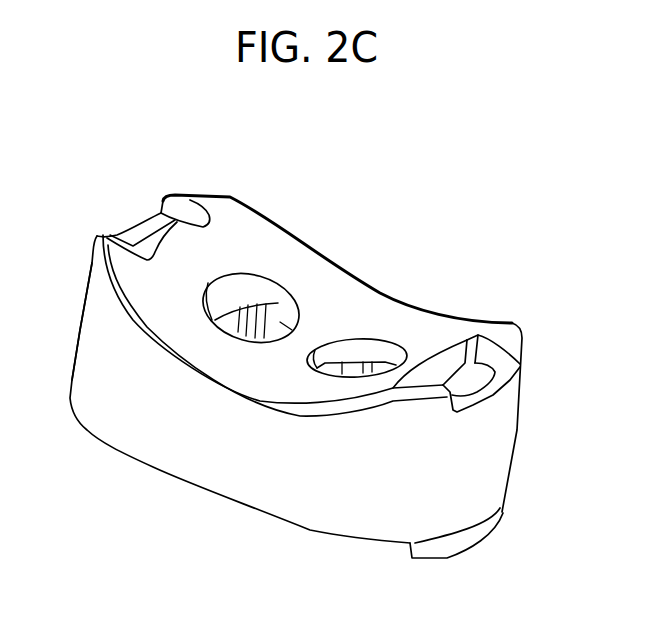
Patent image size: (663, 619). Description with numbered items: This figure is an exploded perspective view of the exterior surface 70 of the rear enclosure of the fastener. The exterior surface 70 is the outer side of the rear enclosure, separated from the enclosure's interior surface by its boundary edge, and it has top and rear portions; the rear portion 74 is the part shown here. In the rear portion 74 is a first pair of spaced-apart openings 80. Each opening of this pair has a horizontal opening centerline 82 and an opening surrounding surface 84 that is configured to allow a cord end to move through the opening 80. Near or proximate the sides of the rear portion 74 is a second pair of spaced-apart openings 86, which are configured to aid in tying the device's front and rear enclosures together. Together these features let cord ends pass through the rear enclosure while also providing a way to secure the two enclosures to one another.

The exterior surface 70 is at (412, 330).
The rear portion 74 is at (167, 325).
The first pair of spaced-apart openings 80 is at (238, 305).
The horizontal opening centerline 82 is at (150, 237).
The opening surrounding surface 84 is at (227, 328).
The second pair of spaced-apart openings 86 is at (467, 380).